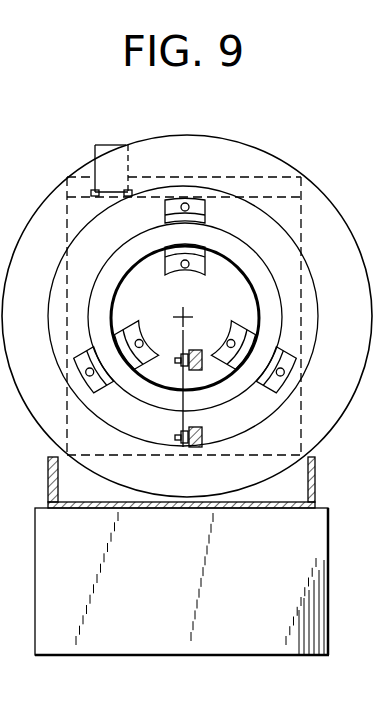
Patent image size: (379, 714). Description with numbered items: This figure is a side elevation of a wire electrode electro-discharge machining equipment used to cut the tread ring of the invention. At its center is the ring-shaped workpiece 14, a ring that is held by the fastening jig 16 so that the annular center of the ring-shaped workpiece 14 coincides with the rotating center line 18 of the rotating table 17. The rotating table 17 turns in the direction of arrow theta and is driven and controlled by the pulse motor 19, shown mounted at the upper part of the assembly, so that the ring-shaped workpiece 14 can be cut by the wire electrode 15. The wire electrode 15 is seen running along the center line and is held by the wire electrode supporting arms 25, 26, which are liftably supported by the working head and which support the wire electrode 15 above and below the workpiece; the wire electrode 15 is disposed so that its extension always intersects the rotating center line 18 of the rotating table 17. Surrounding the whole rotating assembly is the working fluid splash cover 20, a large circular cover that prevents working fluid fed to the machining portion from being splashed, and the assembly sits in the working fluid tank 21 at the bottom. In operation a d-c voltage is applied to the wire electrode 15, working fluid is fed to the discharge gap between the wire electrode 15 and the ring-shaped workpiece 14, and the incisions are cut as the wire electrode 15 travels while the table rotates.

The ring-shaped workpiece 14 is at (118, 275).
The wire electrode 15 is at (181, 418).
The fastening jig 16 is at (204, 218).
The rotating table 17 is at (306, 302).
The rotating center line 18 is at (178, 314).
The pulse motor 19 is at (110, 145).
The working fluid splash cover 20 is at (320, 211).
The working fluid tank 21 is at (317, 478).
The wire electrode supporting arm 25 is at (197, 350).
The wire electrode supporting arm 26 is at (197, 431).